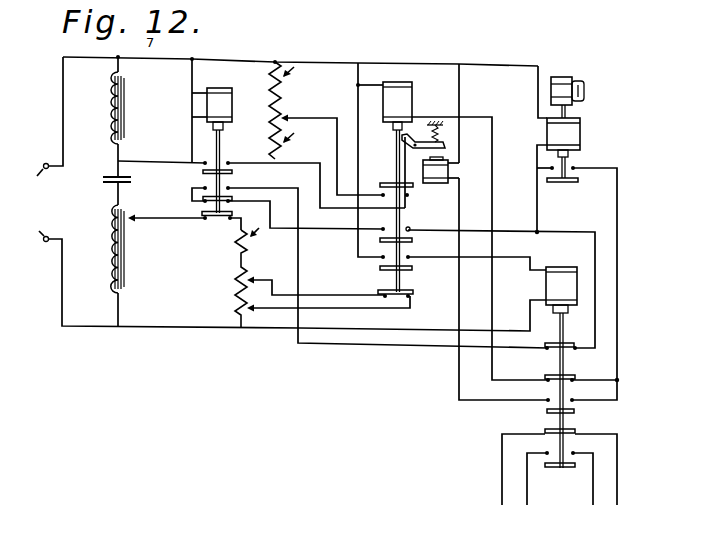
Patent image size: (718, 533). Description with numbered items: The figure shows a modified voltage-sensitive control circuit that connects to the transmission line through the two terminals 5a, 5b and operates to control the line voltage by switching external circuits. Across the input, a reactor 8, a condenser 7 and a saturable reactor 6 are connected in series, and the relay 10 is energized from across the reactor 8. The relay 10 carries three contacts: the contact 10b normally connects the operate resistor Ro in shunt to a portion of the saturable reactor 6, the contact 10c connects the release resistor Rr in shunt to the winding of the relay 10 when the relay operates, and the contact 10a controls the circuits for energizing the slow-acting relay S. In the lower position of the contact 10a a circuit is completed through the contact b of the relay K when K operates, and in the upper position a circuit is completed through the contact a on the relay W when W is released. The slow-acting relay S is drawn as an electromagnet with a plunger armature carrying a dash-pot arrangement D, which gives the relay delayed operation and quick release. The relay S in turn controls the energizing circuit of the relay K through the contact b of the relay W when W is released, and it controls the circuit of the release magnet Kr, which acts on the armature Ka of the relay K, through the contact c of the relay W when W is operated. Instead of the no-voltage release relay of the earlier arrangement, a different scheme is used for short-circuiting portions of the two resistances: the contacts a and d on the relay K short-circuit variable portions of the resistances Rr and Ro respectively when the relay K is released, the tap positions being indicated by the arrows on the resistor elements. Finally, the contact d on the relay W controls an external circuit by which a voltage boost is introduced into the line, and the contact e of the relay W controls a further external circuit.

The input terminal 5a is at (33, 181).
The input terminal 5b is at (32, 229).
The saturable reactor 6 is at (108, 241).
The condenser 7 is at (104, 178).
The reactor 8 is at (111, 104).
The relay 10 is at (207, 100).
The contact on relay 10 10a is at (231, 196).
The contact on relay 10 10b is at (215, 216).
The contact on relay 10 10c is at (203, 171).
The release resistor Rr is at (265, 110).
The operate resistor Ro is at (238, 300).
The relay K is at (397, 187).
The armature of relay K Ka is at (407, 134).
The release magnet Kr is at (436, 184).
The dash-pot arrangement D is at (571, 78).
The slow-acting relay S is at (563, 150).
The relay W is at (561, 367).
The contact a is at (389, 184).
The contact b is at (413, 241).
The contact c is at (413, 268).
The contact d is at (414, 292).
The contact e is at (561, 468).